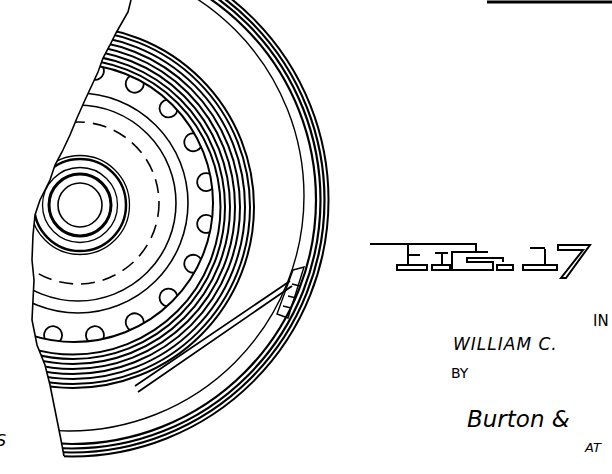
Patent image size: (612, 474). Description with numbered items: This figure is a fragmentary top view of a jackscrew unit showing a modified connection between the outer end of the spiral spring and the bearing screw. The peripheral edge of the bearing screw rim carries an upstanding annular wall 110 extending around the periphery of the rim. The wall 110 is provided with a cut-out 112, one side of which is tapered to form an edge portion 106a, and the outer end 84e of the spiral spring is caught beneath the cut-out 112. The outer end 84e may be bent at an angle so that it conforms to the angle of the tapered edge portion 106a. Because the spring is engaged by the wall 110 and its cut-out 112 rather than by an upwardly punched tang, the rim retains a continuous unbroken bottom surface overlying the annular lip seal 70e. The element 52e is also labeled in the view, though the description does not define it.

The upstanding annular wall 110 is at (303, 147).
The cut-out 112 is at (306, 208).
The tapered edge portion 106a is at (306, 275).
The annular lip seal 70e is at (321, 272).
The outer end of the spiral spring 84e is at (308, 305).
The rib 52e is at (206, 348).